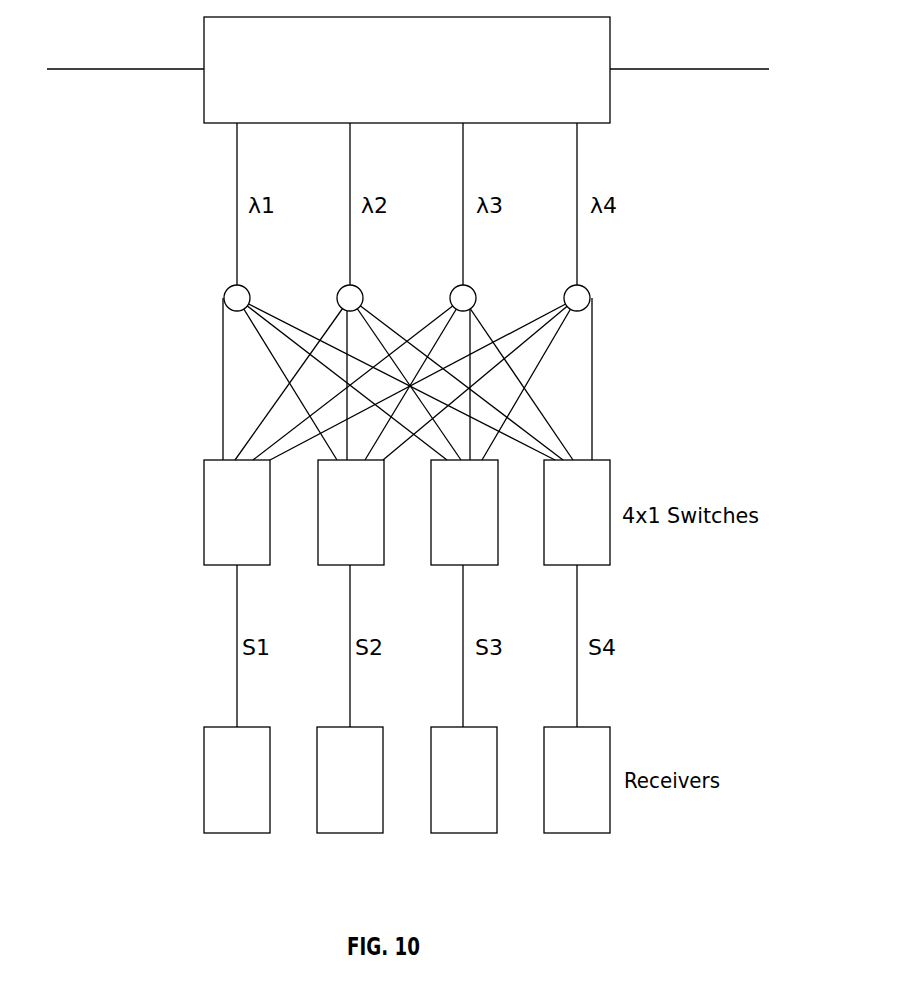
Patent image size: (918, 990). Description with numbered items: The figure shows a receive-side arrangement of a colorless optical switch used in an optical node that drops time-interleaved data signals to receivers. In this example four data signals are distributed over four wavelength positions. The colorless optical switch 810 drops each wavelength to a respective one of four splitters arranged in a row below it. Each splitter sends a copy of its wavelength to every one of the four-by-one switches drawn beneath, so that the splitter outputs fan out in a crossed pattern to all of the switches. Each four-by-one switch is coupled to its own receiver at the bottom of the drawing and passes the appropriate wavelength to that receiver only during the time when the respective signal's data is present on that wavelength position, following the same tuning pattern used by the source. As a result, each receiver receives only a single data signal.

The colorless optical switch 810 is at (610, 97).